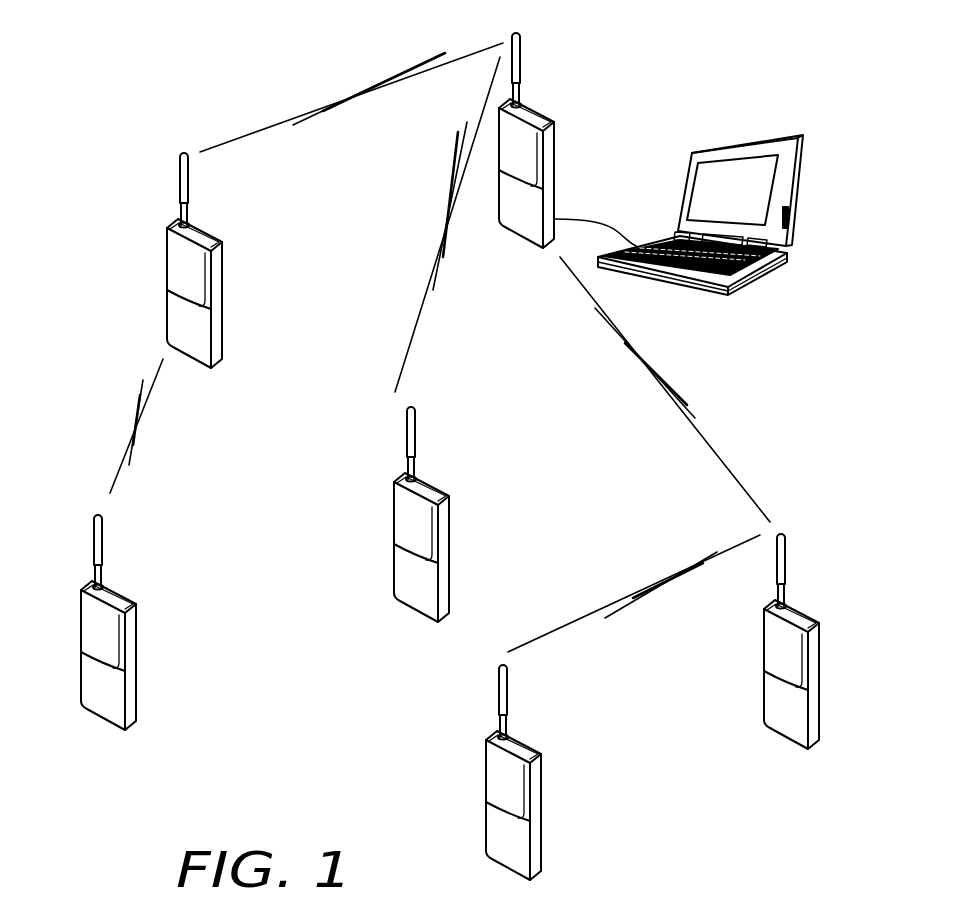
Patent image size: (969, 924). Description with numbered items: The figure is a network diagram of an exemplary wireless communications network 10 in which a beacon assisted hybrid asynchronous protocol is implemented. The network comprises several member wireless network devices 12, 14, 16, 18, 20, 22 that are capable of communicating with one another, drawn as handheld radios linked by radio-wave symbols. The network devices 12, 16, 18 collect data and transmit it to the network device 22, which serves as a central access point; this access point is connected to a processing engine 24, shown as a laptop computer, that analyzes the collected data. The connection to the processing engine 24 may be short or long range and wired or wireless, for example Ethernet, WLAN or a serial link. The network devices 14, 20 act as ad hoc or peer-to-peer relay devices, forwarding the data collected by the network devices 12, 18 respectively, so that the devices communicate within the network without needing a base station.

The wireless communications network 10 is at (275, 811).
The network device 12 is at (87, 636).
The network device 14 is at (181, 263).
The network device 16 is at (404, 523).
The network device 18 is at (496, 780).
The network device 20 is at (768, 640).
The network device 22 is at (544, 153).
The processing engine 24 is at (760, 272).